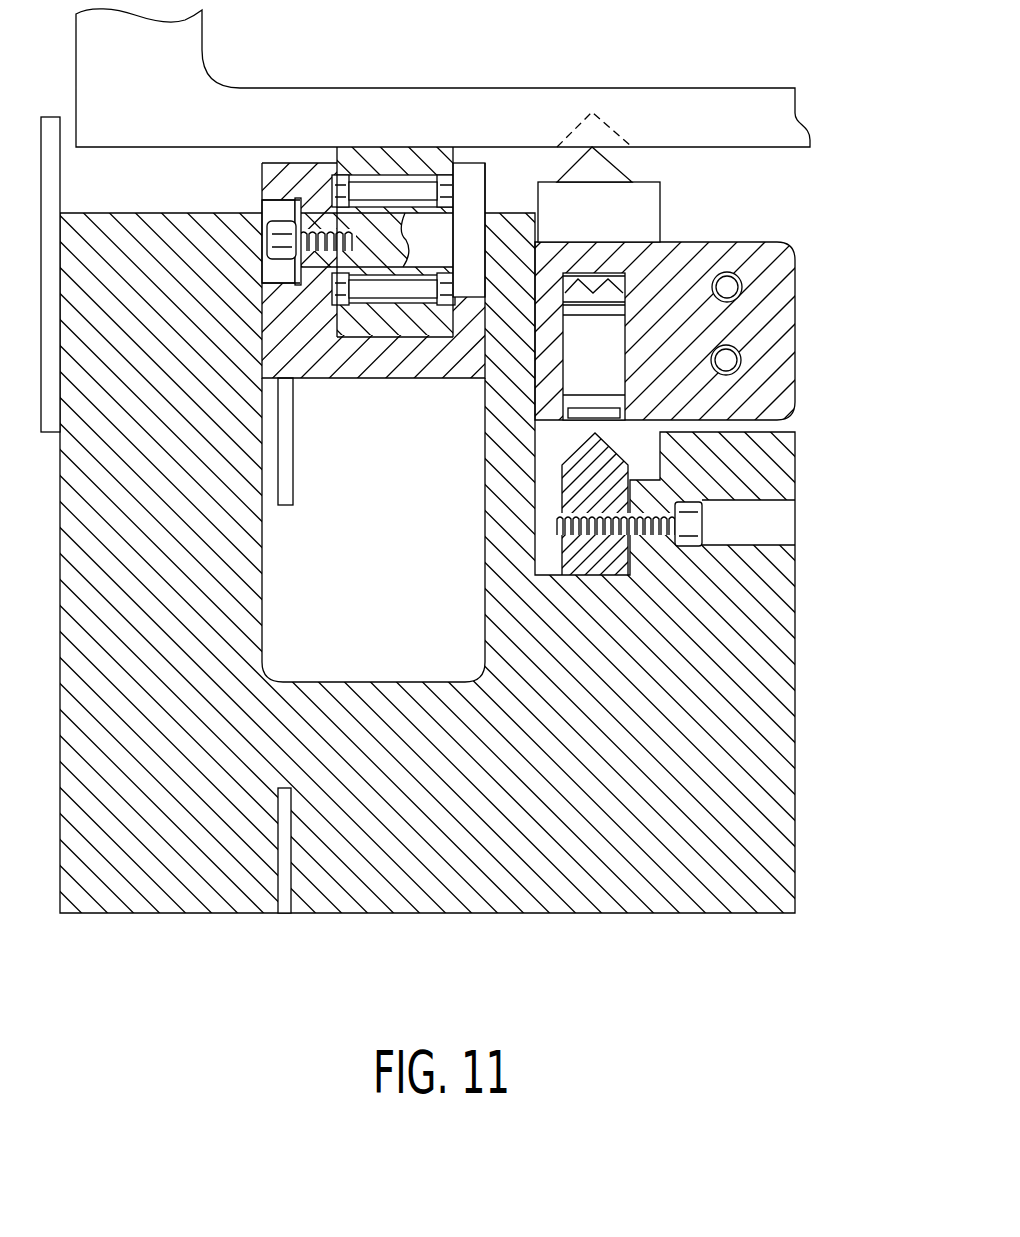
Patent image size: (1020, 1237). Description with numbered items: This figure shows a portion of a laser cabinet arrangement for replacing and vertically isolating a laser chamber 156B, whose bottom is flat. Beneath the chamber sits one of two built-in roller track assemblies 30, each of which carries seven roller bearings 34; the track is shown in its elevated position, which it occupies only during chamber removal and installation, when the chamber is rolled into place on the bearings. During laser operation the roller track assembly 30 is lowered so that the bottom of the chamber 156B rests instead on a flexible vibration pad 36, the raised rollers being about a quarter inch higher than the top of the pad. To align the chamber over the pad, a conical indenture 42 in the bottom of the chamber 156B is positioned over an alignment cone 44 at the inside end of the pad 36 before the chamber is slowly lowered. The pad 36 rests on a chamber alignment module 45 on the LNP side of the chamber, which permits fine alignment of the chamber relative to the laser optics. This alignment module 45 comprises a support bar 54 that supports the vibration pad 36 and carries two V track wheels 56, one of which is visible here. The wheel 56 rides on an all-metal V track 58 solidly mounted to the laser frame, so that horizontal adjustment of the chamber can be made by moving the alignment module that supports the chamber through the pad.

The roller track assembly 30 is at (510, 618).
The roller bearing 34 is at (375, 315).
The flexible pad 36 is at (660, 213).
The conical indenture 42 is at (600, 118).
The alignment cone 44 is at (620, 168).
The alignment module 45 is at (510, 618).
The support bar 54 is at (793, 287).
The V track wheel 56 is at (630, 422).
The V track 58 is at (630, 557).
The chamber 156B is at (403, 133).